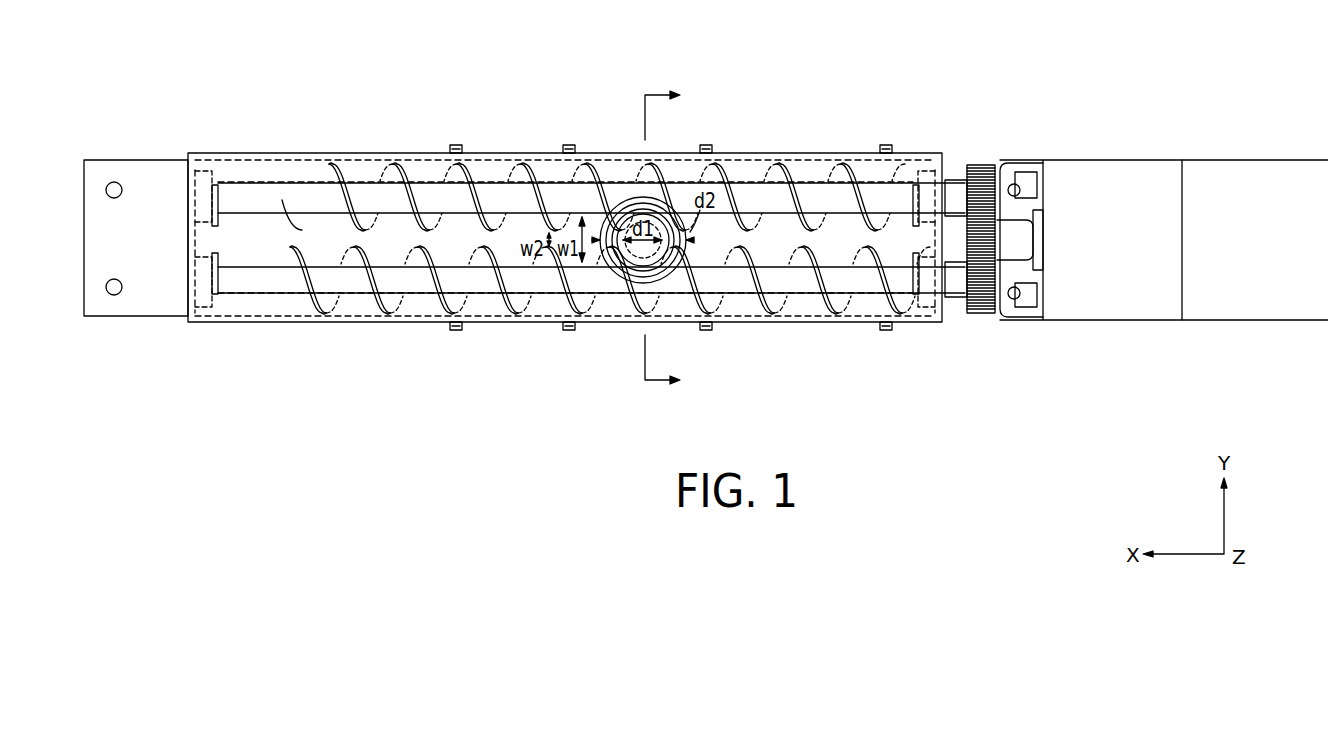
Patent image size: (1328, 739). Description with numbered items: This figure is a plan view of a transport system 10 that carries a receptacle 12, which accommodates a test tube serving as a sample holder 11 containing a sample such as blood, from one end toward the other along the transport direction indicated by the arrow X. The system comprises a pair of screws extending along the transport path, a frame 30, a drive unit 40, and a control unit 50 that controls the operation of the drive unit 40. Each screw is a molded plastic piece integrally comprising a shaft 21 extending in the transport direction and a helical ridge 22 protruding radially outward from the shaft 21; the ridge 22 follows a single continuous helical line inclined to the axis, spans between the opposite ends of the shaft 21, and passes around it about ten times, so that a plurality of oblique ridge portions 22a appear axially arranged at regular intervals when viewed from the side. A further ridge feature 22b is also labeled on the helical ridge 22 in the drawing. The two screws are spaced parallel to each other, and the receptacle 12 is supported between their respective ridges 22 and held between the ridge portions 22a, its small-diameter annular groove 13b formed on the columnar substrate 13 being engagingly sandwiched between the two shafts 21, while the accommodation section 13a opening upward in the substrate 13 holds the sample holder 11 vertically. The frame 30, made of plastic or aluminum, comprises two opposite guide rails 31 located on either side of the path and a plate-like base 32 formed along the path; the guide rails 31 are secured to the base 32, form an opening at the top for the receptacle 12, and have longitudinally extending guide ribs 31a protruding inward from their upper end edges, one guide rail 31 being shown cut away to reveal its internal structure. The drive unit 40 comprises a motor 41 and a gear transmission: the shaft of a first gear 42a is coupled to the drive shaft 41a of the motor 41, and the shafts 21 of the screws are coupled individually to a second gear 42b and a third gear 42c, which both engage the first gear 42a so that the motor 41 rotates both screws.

The transport system 10 is at (1090, 66).
The sample holder 11 is at (605, 190).
The receptacle 12 is at (600, 300).
The columnar substrate 13 is at (630, 197).
The accommodation section 13a is at (678, 200).
The annular groove 13b is at (687, 240).
The shaft 21 is at (757, 200).
The helical ridge 22 is at (830, 212).
The oblique ridge portions 22a is at (395, 165).
The blade cutout 22b is at (560, 236).
The frame 30 is at (905, 322).
The guide rails 31 is at (403, 153).
The guide ribs 31a is at (430, 153).
The plate-like base 32 is at (365, 322).
The drive unit 40 is at (1113, 165).
The motor 41 is at (1115, 300).
The drive shaft 41a is at (1030, 305).
The first gear 42a is at (1005, 220).
The second gear 42b is at (980, 176).
The third gear 42c is at (985, 300).
The control unit 50 is at (1247, 170).